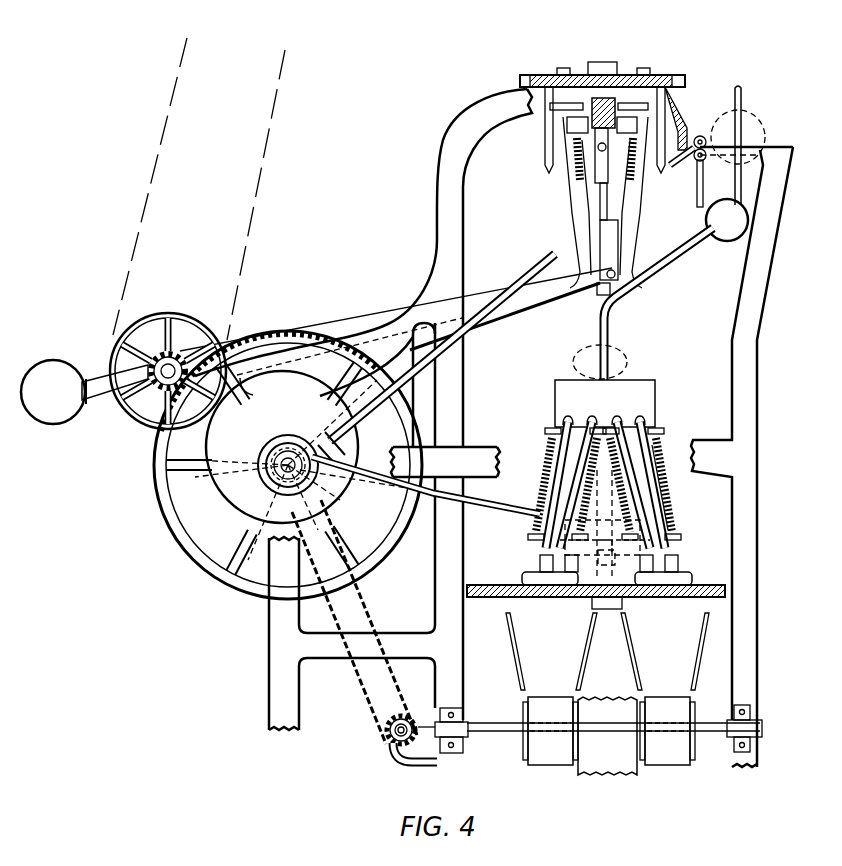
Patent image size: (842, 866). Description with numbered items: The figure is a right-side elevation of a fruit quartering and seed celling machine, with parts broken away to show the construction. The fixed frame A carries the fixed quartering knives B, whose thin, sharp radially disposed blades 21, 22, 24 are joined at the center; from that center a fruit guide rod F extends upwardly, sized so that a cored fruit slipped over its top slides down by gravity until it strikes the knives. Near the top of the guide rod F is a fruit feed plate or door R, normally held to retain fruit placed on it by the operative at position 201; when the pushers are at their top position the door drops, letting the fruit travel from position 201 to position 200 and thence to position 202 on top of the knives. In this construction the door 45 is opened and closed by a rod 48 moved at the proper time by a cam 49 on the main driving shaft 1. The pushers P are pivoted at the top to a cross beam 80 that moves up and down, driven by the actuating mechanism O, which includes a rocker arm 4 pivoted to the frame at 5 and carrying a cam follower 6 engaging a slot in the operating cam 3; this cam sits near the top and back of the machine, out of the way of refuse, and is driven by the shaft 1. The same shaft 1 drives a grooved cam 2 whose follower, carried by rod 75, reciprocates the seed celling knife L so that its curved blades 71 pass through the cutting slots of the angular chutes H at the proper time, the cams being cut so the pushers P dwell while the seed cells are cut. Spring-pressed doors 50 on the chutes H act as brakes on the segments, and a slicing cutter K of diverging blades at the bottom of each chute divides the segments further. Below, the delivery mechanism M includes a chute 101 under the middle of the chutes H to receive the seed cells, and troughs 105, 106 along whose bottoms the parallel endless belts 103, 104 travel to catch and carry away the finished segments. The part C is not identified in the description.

The main driving shaft 1 is at (268, 478).
The cam 2 is at (283, 440).
The operating cam 3 is at (364, 434).
The rocker arm 4 is at (332, 322).
The pivot 5 is at (171, 363).
The cam follower 6 is at (292, 333).
The blade 21 is at (608, 392).
The blade 22 is at (630, 403).
The blade 24 is at (580, 403).
The door 45 is at (697, 194).
The rod 48 is at (540, 258).
The cam 49 is at (318, 488).
The door 50 is at (668, 494).
The seed celling blade 71 is at (612, 556).
The rod 75 is at (500, 508).
The cross beam 80 is at (612, 98).
The chute 101 is at (608, 690).
The endless belt 103 is at (667, 731).
The endless belt 104 is at (550, 731).
The trough 105 is at (698, 652).
The trough 106 is at (585, 652).
The fruit position 200 is at (725, 234).
The fruit position 201 is at (760, 130).
The fruit position 202 is at (625, 360).
The fixed frame A is at (494, 428).
The quartering knives B is at (655, 408).
The hanger C is at (545, 148).
The fruit guide rod F is at (741, 100).
The angular chute H is at (545, 483).
The slicing cutter K is at (680, 572).
The seed celling knife L is at (660, 528).
The delivery mechanism M is at (640, 665).
The actuating mechanism O is at (370, 318).
The pushers P is at (572, 230).
The fruit feed plate R is at (704, 180).